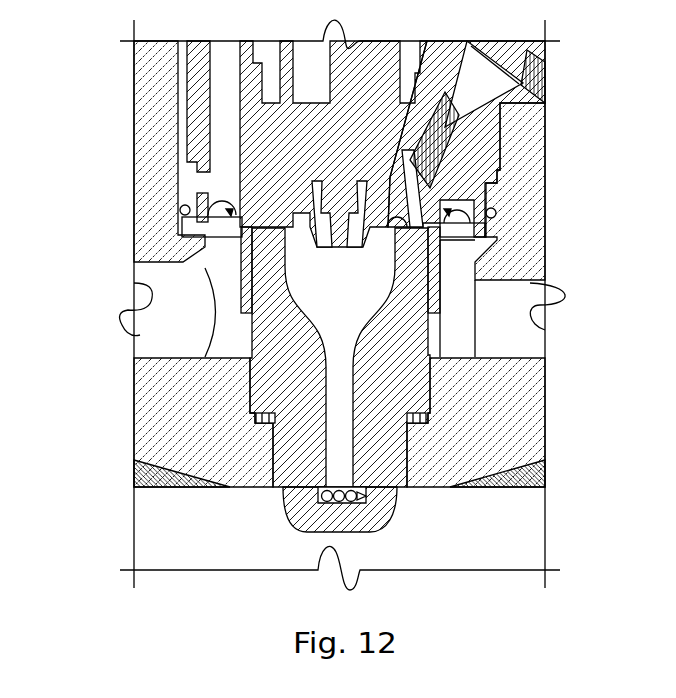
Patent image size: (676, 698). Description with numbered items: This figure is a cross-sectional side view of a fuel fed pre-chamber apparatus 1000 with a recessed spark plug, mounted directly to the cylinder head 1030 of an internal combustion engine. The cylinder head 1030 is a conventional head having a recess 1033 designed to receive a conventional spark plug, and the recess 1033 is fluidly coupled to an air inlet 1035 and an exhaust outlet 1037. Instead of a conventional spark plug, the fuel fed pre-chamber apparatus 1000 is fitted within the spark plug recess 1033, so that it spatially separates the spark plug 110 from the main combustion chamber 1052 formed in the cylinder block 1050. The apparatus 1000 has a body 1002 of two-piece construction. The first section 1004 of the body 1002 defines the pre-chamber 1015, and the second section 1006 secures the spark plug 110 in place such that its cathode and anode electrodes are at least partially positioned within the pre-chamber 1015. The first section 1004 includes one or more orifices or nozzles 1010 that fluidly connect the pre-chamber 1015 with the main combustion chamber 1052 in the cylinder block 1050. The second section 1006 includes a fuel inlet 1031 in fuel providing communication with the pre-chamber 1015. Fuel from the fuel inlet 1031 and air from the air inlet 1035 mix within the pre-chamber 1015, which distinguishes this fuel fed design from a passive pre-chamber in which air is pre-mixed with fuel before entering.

The fuel fed pre-chamber apparatus 1000 is at (503, 168).
The body 1002 is at (252, 342).
The first section 1004 is at (265, 385).
The second section 1006 is at (258, 105).
The orifices or nozzles 1010 is at (302, 498).
The pre-chamber 1015 is at (366, 302).
The cylinder head 1030 is at (517, 396).
The fuel inlet 1031 is at (417, 200).
The recess 1033 is at (182, 214).
The air inlet 1035 is at (160, 284).
The exhaust outlet 1037 is at (505, 335).
The cylinder block 1050 is at (517, 478).
The main combustion chamber 1052 is at (517, 527).
The spark plug 110 is at (288, 213).